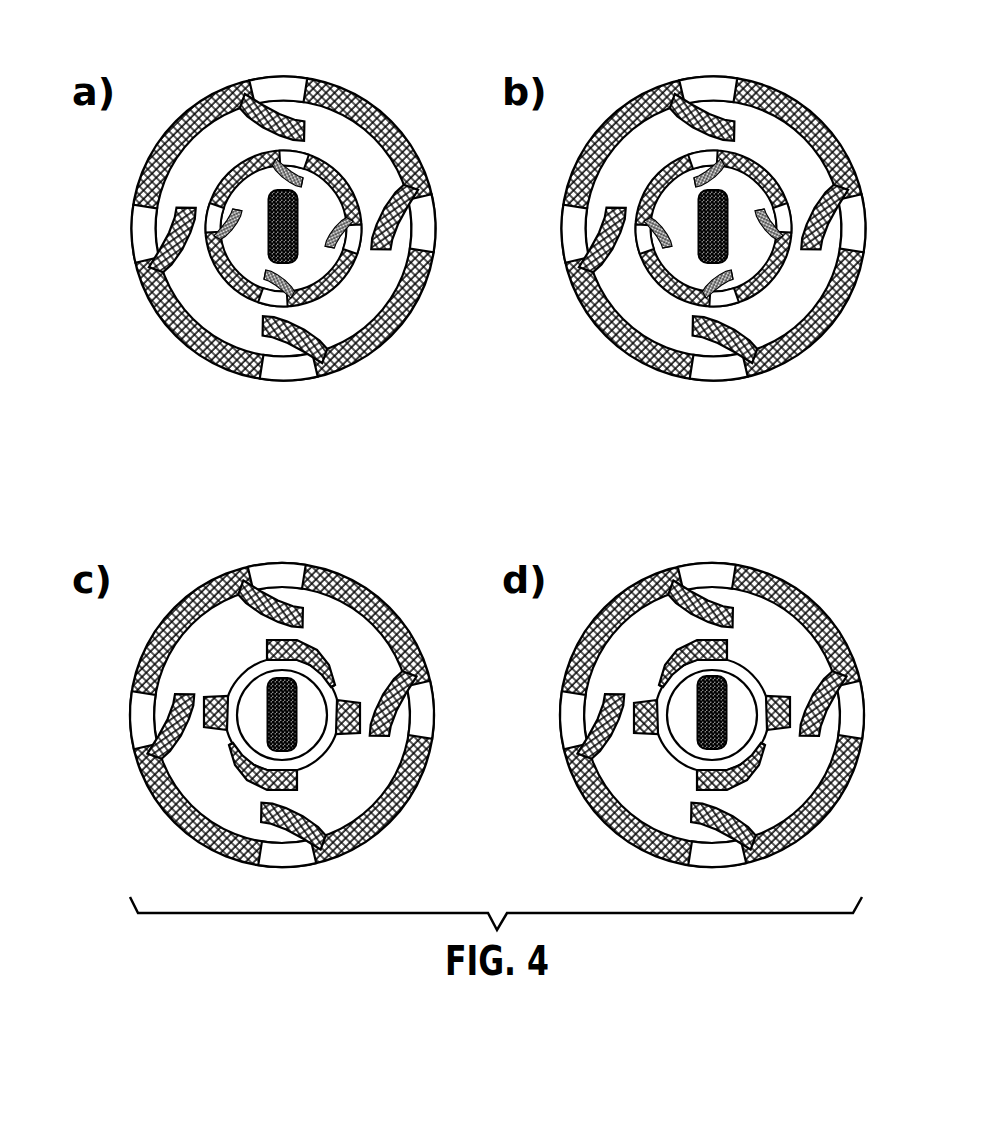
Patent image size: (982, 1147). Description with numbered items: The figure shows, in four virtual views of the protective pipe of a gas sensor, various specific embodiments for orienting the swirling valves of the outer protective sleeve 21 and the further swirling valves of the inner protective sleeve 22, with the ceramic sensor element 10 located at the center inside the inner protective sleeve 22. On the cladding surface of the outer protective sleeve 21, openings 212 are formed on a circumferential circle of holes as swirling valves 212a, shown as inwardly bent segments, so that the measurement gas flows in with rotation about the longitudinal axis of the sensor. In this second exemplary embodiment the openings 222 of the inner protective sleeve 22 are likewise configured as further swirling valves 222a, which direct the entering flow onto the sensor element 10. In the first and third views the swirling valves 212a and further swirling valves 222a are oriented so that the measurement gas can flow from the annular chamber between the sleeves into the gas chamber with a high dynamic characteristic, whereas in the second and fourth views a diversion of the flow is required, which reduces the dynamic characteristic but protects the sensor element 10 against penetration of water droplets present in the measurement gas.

The sensor element 10 is at (288, 246).
The outer protective sleeve 21 is at (157, 163).
The inner protective sleeve 22 is at (212, 208).
The openings 212 is at (298, 80).
The swirling valves 212a is at (285, 112).
The openings 222 is at (148, 218).
The further swirling valves 222a is at (223, 268).